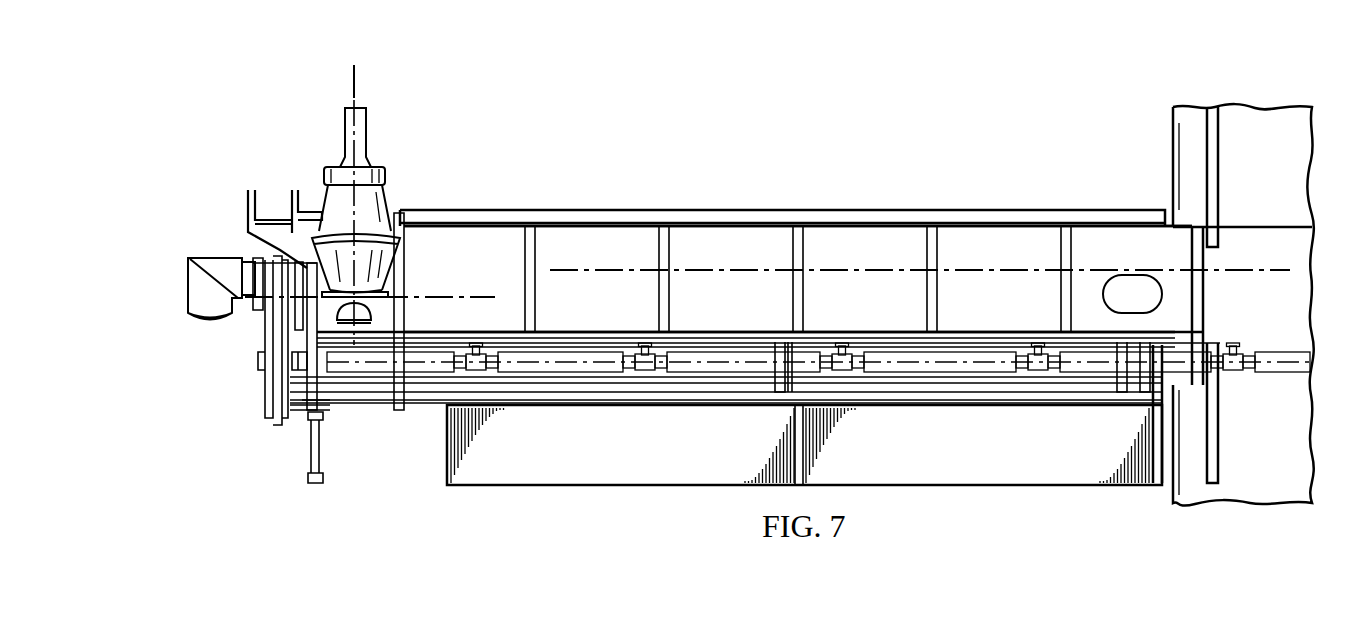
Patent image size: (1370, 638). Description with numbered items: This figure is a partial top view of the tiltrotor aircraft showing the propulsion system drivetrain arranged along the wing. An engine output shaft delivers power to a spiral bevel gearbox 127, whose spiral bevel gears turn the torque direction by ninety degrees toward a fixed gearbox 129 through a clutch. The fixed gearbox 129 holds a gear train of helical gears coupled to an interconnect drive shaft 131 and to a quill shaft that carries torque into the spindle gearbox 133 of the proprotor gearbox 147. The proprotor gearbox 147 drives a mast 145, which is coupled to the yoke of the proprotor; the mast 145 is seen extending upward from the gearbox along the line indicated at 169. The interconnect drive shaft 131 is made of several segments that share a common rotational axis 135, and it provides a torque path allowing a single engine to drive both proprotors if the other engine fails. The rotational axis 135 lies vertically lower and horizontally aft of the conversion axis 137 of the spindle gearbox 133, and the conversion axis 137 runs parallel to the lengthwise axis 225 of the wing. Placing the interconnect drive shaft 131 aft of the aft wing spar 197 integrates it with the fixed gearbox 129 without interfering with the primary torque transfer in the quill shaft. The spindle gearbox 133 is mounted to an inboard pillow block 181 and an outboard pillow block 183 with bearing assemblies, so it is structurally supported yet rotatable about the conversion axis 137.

The spiral bevel gearbox 127 is at (187, 290).
The fixed gearbox 129 is at (263, 398).
The interconnect drive shaft 131 is at (428, 372).
The spindle gearbox 133 is at (328, 310).
The rotational axis 135 is at (536, 366).
The conversion axis 137 is at (490, 297).
The mast 145 is at (345, 129).
The proprotor gearbox 147 is at (384, 168).
The vertical axis 169 is at (352, 85).
The inboard pillow block 181 is at (405, 278).
The outboard pillow block 183 is at (310, 283).
The aft wing spar 197 is at (372, 342).
The lengthwise axis 225 is at (836, 272).